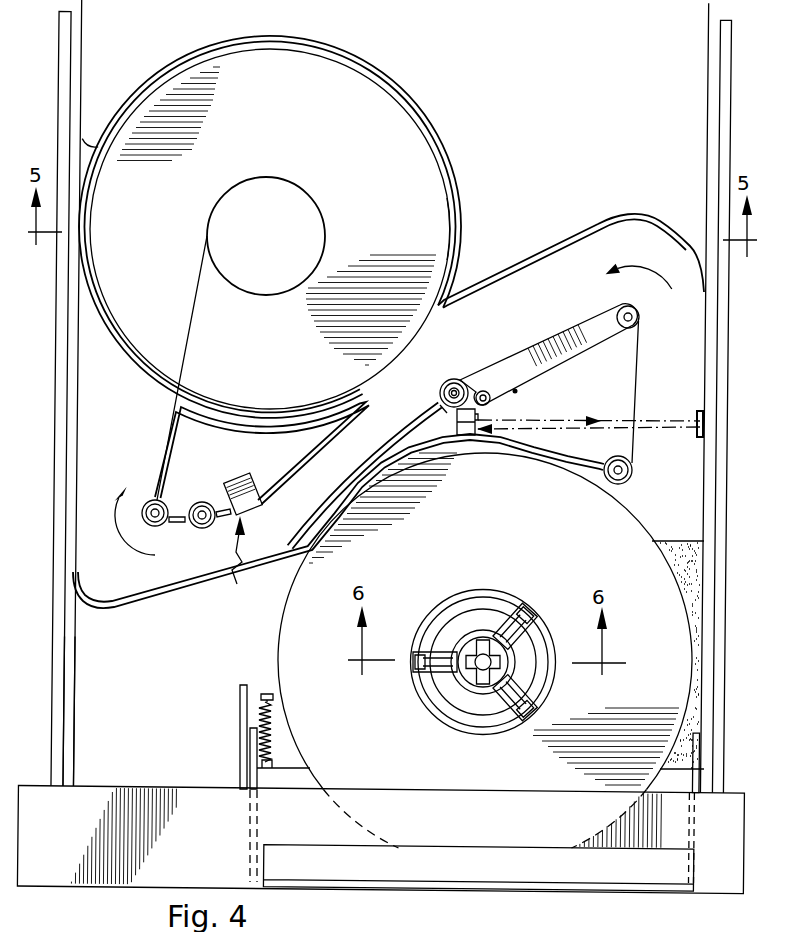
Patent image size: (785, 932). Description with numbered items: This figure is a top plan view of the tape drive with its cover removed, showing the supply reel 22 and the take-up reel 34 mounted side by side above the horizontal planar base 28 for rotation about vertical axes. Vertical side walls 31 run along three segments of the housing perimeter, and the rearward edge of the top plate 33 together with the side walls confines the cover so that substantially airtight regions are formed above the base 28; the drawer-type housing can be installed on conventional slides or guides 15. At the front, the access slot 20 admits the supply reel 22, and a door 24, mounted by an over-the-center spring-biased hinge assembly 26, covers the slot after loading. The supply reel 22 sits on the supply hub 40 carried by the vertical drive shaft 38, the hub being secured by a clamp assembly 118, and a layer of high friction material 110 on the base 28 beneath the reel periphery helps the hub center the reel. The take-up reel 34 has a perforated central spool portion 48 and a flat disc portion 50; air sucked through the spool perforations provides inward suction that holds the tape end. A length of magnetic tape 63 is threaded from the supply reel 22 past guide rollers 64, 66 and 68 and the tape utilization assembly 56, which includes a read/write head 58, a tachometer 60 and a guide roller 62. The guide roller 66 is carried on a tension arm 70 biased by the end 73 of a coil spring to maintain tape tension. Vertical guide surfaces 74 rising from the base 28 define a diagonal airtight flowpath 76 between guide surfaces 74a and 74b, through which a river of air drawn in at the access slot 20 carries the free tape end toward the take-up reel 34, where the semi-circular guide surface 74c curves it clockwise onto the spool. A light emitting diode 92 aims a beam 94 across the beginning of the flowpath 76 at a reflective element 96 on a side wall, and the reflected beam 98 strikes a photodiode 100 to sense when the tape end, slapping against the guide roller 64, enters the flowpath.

The semi-circular guide surface 74c is at (352, 55).
The take-up reel 34 is at (388, 136).
The central spool portion 48 is at (305, 209).
The disc portion 50 is at (430, 238).
The magnetic tape 63 is at (199, 271).
The vertical side walls 31 is at (79, 374).
The slides or guides 15 is at (57, 446).
The guide surface 74b is at (318, 452).
The flowpath 76 is at (123, 540).
The guide roller 66 is at (618, 310).
The end of coil spring 73 is at (513, 389).
The tension arm 70 is at (557, 347).
The guide roller 68 is at (457, 380).
The light emitting diode 92 is at (447, 413).
The beam 94 is at (532, 419).
The reflective element 96 is at (697, 415).
The reflected beam 98 is at (570, 428).
The photodiode 100 is at (468, 437).
The read/write head 58 is at (241, 481).
The tachometer 60 is at (201, 502).
The guide roller 62 is at (161, 526).
The guide surfaces 74 is at (332, 502).
The guide surface 74a is at (177, 589).
The tape utilization assembly 56 is at (208, 559).
The guide roller 64 is at (633, 478).
The high friction material 110 is at (690, 553).
The supply reel 22 is at (291, 612).
The clamp assembly 118 is at (477, 647).
The drive shaft 38 is at (487, 664).
The supply hub 40 is at (437, 699).
The base 28 is at (80, 682).
The hinge assembly 26 is at (243, 733).
The top plate 33 is at (100, 880).
The door 24 is at (480, 888).
The access slot 20 is at (643, 850).